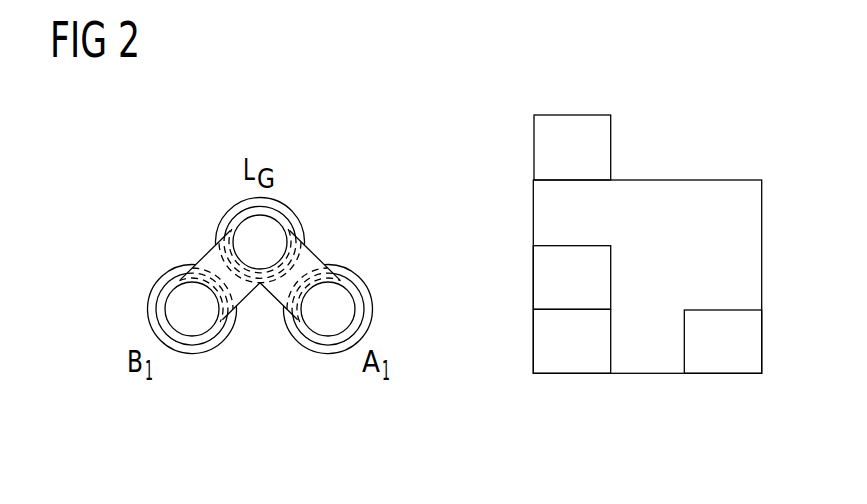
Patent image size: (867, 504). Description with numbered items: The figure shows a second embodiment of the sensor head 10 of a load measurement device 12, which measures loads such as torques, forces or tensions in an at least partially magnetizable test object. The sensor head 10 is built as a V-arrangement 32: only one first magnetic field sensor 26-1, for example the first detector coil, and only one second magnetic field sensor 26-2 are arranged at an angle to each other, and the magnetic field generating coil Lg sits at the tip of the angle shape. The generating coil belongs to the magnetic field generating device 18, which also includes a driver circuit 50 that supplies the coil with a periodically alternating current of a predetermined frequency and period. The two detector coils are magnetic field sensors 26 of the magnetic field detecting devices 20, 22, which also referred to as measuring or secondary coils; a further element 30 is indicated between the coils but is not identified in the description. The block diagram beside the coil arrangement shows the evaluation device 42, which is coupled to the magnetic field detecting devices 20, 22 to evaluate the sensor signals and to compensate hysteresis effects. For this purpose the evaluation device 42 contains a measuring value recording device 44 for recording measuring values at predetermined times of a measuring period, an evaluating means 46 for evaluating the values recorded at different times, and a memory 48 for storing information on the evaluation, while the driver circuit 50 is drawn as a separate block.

The sensor head 10 is at (163, 172).
The V-arrangement 32 is at (338, 122).
The magnetic field generating device 18 is at (286, 208).
The load measurement device 12 is at (418, 216).
The shielding layer 30 is at (312, 251).
The second magnetic field sensor 26-2 is at (130, 254).
The first magnetic field sensor 26-1 is at (402, 296).
The magnetic field detecting device 22 is at (398, 329).
The magnetic field sensors 26 is at (280, 390).
The magnetic field detecting device 20 is at (260, 309).
The evaluation device 42 is at (588, 230).
The driver circuit 50 is at (587, 165).
The measuring value recording device 44 is at (587, 293).
The evaluating means 46 is at (587, 357).
The memory 48 is at (738, 358).